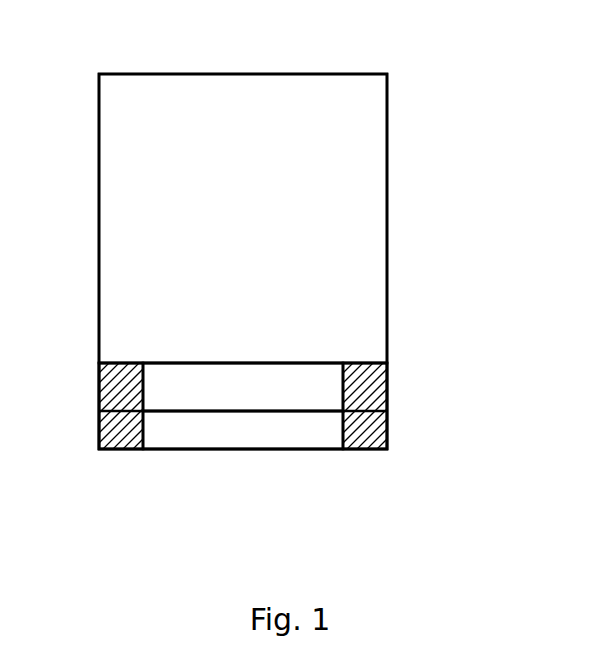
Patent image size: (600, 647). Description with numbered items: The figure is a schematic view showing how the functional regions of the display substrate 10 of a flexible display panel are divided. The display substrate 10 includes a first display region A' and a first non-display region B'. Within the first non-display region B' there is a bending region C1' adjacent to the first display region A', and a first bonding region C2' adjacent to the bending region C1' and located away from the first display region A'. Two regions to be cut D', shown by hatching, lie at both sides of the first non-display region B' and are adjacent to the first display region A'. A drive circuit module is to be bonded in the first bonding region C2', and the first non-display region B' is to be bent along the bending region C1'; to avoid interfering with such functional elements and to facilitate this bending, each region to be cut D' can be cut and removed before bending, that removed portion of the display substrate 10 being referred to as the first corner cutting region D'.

The display substrate 10 is at (302, 27).
The first display region A' is at (275, 218).
The first non-display region B' is at (271, 406).
The bending region C1' is at (257, 445).
The first bonding region C2' is at (243, 483).
The region to be cut D' is at (270, 462).